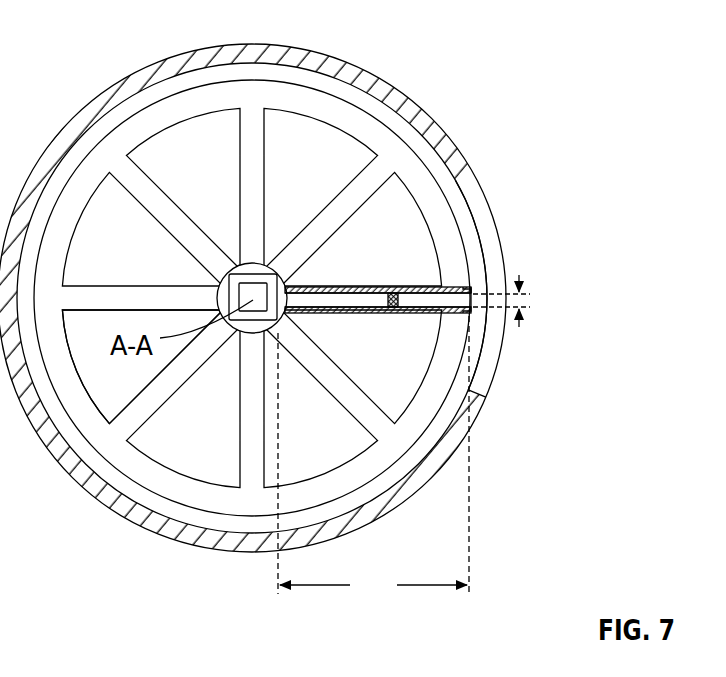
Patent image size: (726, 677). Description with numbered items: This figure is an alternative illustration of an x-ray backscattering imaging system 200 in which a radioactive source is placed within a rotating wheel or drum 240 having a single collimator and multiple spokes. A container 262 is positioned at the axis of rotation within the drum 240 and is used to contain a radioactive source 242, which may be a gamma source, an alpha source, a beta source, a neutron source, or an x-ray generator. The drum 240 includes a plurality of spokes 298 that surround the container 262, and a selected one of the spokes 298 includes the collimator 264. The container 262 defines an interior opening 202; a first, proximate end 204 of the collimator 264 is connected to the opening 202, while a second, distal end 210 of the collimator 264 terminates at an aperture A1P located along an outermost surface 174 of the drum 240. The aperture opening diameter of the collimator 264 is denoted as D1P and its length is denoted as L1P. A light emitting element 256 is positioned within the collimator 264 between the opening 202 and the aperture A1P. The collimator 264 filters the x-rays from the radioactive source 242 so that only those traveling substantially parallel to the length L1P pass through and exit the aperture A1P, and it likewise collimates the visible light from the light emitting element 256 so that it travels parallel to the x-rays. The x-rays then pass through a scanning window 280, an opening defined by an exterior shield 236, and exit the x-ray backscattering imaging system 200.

The x-ray backscattering imaging system 200 is at (500, 37).
The rotating wheel or drum 240 is at (157, 102).
The outermost surface 174 is at (457, 222).
The radioactive source 242 is at (262, 283).
The container 262 is at (220, 283).
The collimator 264 is at (390, 290).
The first, proximate end 204 is at (297, 281).
The interior opening 202 is at (286, 300).
The light emitting element 256 is at (405, 313).
The second, distal end 210 is at (476, 309).
The scanning window 280 is at (481, 391).
The spokes 298 is at (133, 433).
The exterior shield 236 is at (373, 523).
The aperture A1P is at (473, 289).
The aperture opening diameter D1P is at (522, 300).
The length of the collimator L1P is at (373, 459).